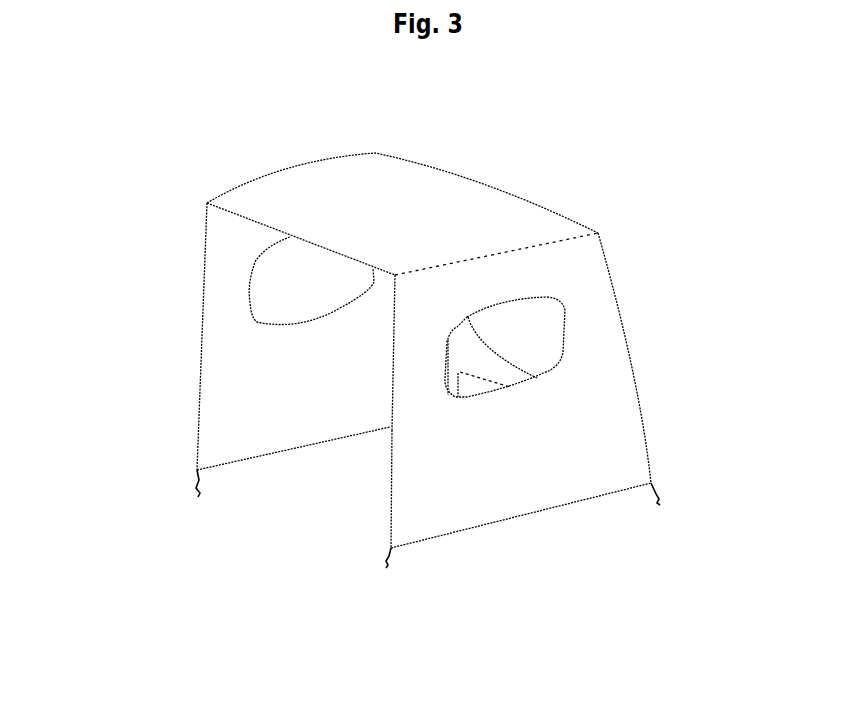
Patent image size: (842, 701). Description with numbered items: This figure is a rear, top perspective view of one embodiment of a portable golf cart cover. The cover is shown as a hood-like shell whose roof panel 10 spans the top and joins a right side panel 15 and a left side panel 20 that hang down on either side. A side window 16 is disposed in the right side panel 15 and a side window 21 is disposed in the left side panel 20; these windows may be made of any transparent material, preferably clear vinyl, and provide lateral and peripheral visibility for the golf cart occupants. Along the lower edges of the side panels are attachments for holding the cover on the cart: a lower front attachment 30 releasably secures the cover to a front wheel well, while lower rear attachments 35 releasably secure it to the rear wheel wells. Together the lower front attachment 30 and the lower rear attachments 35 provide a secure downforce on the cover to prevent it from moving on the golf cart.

The roof panel 10 is at (308, 186).
The right side panel 15 is at (604, 429).
The side window 16 is at (567, 312).
The left side panel 20 is at (228, 392).
The side window 21 is at (250, 285).
The lower front attachment 30 is at (660, 515).
The lower rear attachment 35 is at (198, 495).